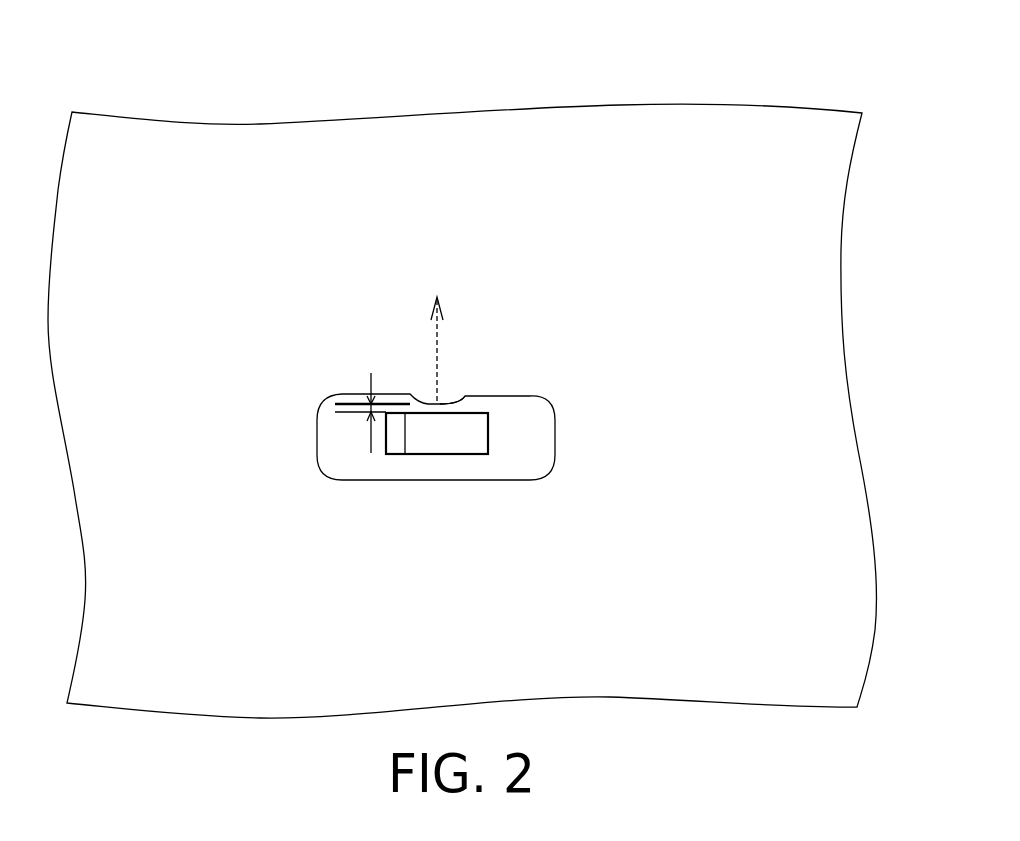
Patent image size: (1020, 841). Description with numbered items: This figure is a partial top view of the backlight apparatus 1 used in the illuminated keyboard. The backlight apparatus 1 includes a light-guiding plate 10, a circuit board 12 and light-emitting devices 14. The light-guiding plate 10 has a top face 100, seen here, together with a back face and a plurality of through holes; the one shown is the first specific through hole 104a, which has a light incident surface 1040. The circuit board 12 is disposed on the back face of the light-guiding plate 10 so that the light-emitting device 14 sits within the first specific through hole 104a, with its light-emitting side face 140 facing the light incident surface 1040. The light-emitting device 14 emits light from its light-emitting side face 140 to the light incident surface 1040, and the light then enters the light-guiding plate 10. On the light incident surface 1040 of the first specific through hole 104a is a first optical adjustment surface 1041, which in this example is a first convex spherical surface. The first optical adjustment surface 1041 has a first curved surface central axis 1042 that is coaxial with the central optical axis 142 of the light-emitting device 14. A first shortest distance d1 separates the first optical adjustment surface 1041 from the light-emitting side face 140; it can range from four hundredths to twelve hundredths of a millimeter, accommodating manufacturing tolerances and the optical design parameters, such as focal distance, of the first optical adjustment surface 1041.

The backlight apparatus 1 is at (462, 94).
The light-guiding plate 10 is at (707, 150).
The top face 100 is at (783, 563).
The first specific through hole 104a is at (533, 420).
The light incident surface 1040 is at (362, 396).
The first optical adjustment surface 1041 is at (465, 397).
The first curved surface central axis 1042 is at (430, 302).
The circuit board 12 is at (512, 455).
The light-emitting device 14 is at (447, 437).
The light-emitting side face 140 is at (405, 452).
The central optical axis 142 is at (435, 382).
The first shortest distance d1 is at (371, 440).